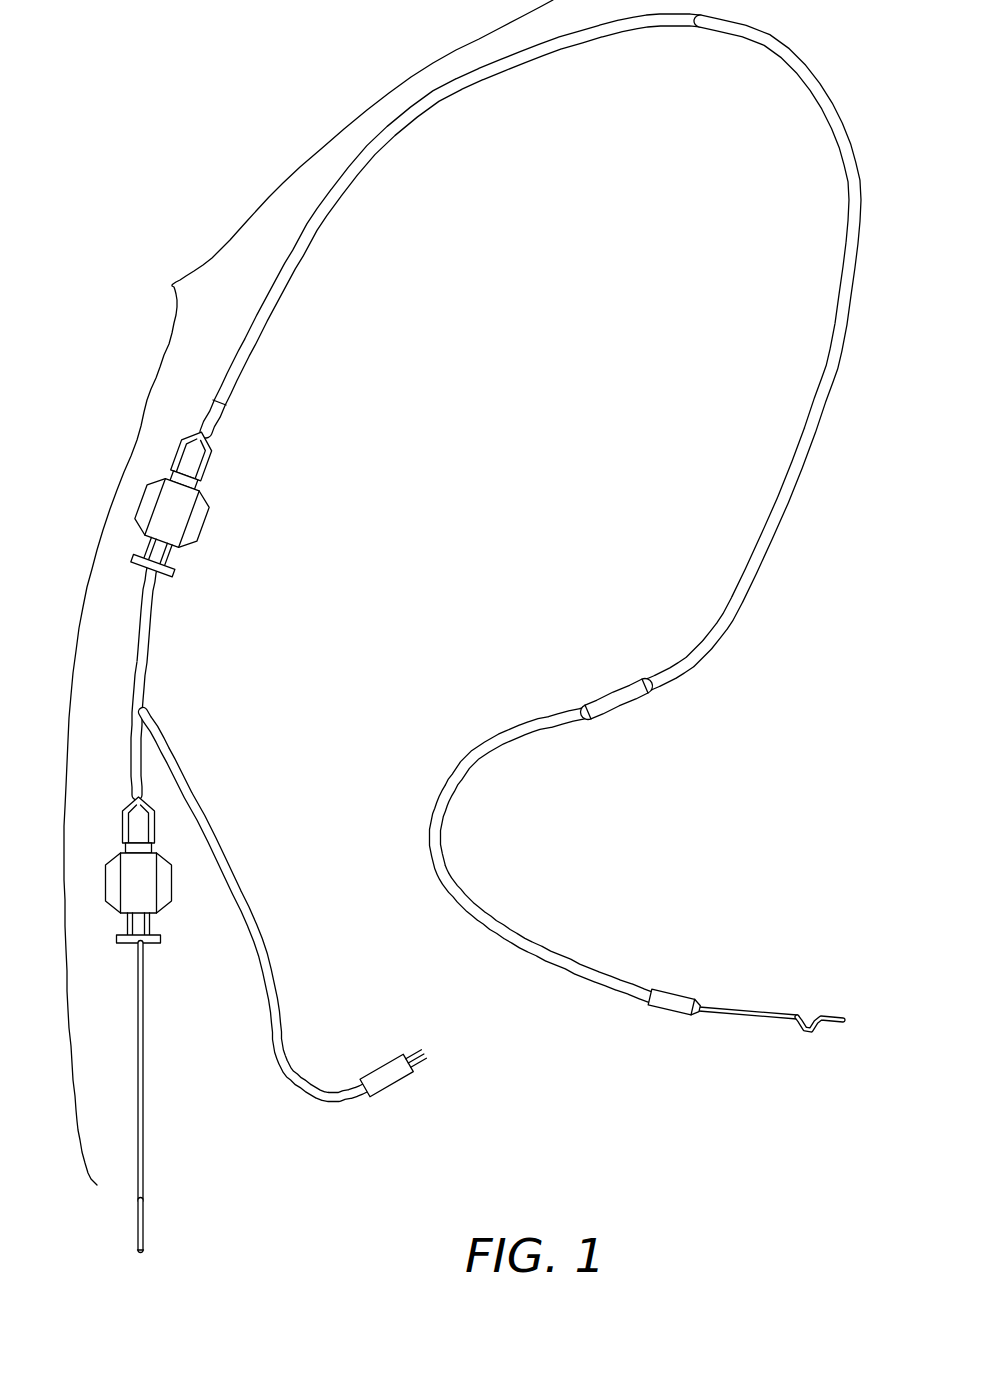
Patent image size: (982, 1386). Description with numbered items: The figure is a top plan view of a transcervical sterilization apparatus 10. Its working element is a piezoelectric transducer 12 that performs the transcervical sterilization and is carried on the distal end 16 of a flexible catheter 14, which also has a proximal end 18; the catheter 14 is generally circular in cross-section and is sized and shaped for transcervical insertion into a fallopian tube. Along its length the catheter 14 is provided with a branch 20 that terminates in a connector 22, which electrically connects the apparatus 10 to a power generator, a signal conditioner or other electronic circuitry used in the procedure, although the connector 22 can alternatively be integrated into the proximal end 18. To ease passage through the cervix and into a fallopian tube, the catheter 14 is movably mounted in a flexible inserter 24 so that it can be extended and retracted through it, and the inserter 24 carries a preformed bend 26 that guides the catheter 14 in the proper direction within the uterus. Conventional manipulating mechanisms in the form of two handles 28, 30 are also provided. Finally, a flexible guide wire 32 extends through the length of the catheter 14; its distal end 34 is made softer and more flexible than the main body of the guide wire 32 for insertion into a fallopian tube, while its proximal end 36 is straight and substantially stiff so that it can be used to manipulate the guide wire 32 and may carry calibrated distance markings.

The sterilization apparatus 10 is at (173, 285).
The piezoelectric transducer 12 is at (732, 978).
The flexible catheter 14 is at (145, 652).
The distal end 16 is at (637, 988).
The proximal end 18 is at (403, 1060).
The branch 20 is at (200, 806).
The connector 22 is at (131, 766).
The inserter 24 is at (812, 412).
The preformed bend 26 is at (588, 700).
The handle 28 is at (207, 525).
The handle 30 is at (171, 884).
The flexible guide wire 32 is at (143, 1068).
The distal end 34 is at (831, 1017).
The proximal end 36 is at (143, 1180).